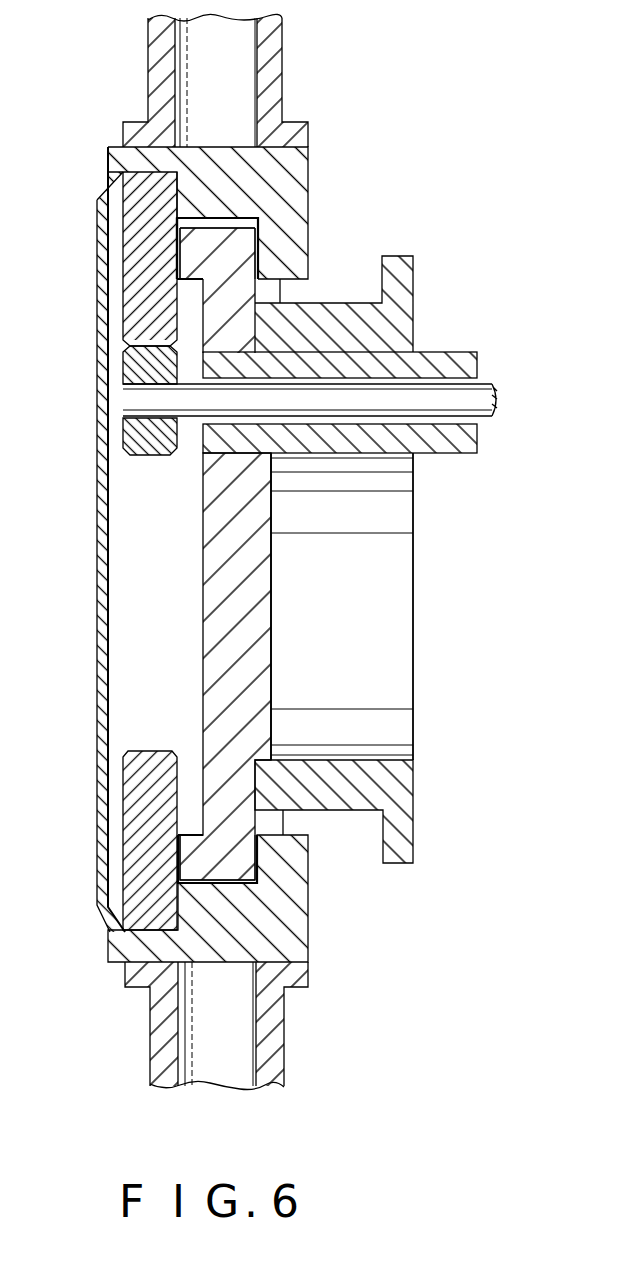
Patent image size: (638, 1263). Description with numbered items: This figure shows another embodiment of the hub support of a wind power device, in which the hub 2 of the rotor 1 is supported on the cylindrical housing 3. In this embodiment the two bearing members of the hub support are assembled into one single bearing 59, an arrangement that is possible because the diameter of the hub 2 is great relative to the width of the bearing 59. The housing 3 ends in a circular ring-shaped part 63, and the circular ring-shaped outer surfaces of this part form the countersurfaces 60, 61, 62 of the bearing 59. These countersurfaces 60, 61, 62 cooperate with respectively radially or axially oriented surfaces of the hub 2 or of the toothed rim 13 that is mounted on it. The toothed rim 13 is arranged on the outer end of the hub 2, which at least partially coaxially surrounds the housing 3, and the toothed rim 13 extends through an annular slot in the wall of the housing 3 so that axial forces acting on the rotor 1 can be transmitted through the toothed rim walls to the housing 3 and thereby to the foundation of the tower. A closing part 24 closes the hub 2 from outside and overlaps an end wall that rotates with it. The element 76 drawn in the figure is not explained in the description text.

The rotor 1 is at (265, 65).
The hub 2 is at (297, 177).
The housing 3 is at (383, 318).
The toothed rim 13 is at (148, 278).
The closing part 24 is at (103, 580).
The bearing 59 is at (381, 223).
The countersurface 60 is at (175, 250).
The countersurface 61 is at (217, 226).
The countersurface 62 is at (255, 247).
The circular ring-shaped part 63 is at (235, 256).
The bushing 76 is at (150, 433).